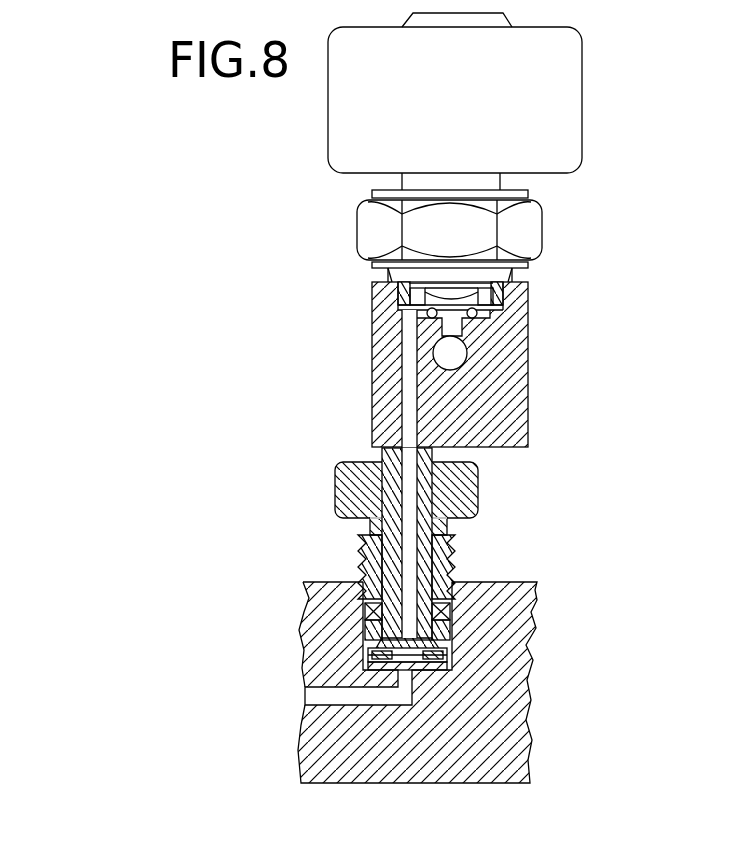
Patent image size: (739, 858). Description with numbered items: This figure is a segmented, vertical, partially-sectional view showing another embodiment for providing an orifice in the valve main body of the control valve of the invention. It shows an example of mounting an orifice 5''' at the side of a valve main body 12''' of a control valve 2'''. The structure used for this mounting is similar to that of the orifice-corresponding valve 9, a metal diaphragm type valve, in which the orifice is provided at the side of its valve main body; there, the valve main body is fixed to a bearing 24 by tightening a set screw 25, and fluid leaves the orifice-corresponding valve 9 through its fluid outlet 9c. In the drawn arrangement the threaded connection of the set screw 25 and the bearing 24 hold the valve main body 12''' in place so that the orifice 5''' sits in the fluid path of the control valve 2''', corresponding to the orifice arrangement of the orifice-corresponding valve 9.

The orifice-corresponding valve 9 is at (493, 326).
The fluid outlet 9c is at (455, 355).
The set screw 25 is at (450, 503).
The bearing 24 is at (367, 607).
The valve main body 12''' is at (442, 657).
The orifice 5''' is at (500, 620).
The control valve 2''' is at (379, 615).